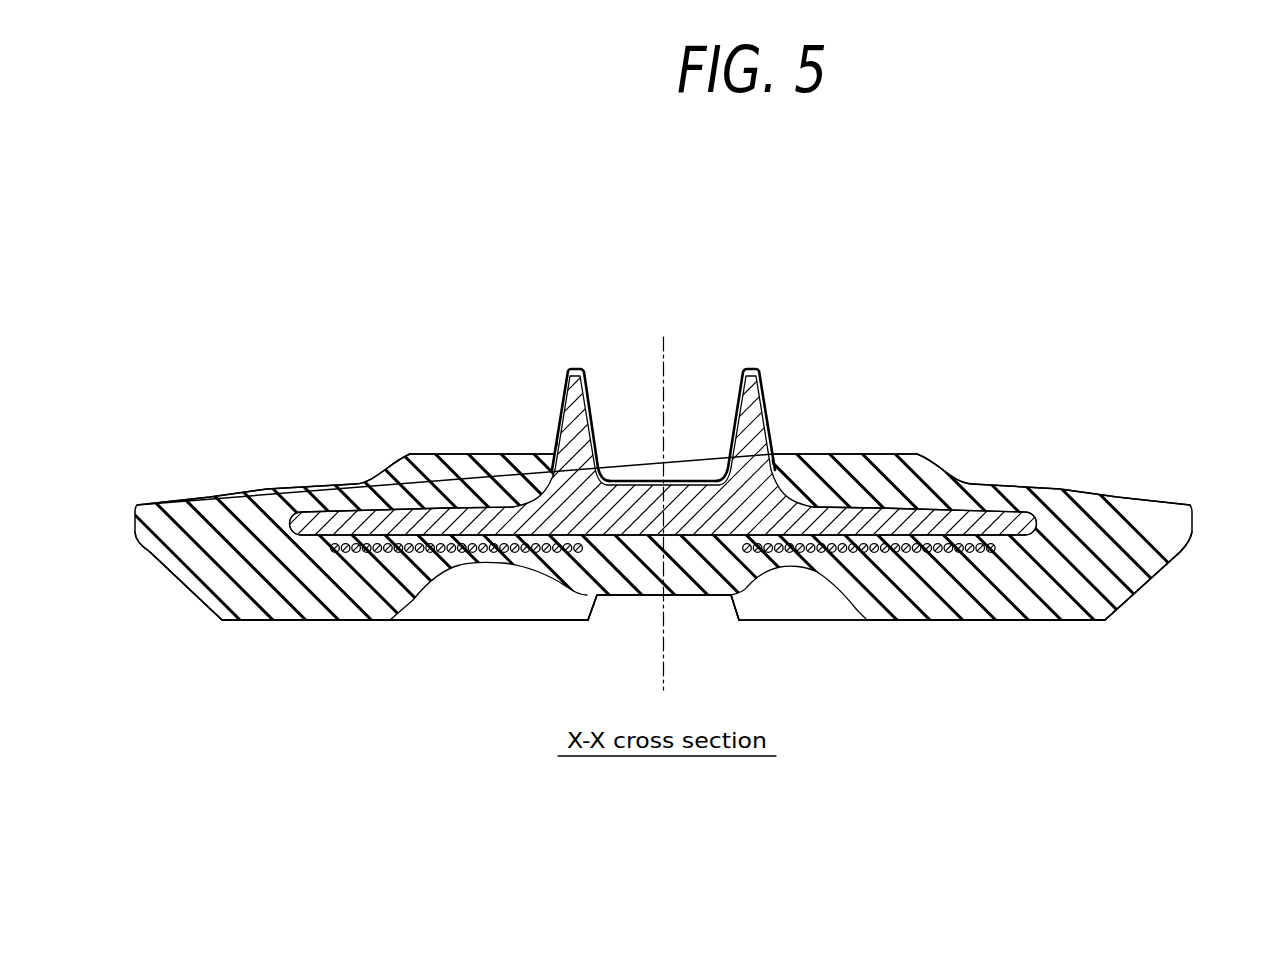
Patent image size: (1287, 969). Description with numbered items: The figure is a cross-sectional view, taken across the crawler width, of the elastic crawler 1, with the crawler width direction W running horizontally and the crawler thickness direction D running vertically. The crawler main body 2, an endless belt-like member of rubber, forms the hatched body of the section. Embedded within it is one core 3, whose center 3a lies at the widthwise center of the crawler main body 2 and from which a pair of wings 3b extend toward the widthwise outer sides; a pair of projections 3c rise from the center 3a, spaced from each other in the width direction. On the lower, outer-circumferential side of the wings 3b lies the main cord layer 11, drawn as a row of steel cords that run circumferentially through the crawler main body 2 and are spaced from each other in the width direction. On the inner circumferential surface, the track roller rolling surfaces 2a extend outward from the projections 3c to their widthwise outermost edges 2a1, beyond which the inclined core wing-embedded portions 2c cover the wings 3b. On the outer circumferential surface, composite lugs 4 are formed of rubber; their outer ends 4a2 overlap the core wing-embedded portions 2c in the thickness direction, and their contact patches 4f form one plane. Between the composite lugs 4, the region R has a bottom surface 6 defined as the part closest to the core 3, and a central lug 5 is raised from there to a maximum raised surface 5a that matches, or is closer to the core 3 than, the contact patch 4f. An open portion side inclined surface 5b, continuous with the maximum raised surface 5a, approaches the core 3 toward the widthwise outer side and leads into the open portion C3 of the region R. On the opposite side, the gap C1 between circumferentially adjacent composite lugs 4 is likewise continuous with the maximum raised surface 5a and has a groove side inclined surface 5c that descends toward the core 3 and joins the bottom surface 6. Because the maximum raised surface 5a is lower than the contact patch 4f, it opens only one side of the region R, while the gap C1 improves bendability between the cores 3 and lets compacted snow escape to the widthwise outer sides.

The elastic crawler 1 is at (972, 369).
The crawler main body 2 is at (158, 527).
The track roller rolling surface 2a is at (447, 452).
The widthwise outermost edge of the track roller rolling surface 2a1 is at (407, 452).
The core wing-embedded portion 2c is at (290, 489).
The core 3 is at (561, 500).
The center of the core 3a is at (647, 492).
The wing 3b is at (347, 522).
The projection 3c is at (574, 420).
The composite lug 4 is at (323, 632).
The outer end of the lug 4a2 is at (213, 583).
The contact patch 4f is at (258, 623).
The central lug 5 is at (629, 606).
The maximum raised surface 5a is at (690, 597).
The open portion side inclined surface 5b is at (767, 588).
The groove side inclined surface 5c is at (570, 588).
The bottom surface 6 is at (480, 567).
The main cord layer 11 is at (486, 558).
The gap C1 is at (428, 609).
The open portion C3 is at (733, 611).
The region R is at (804, 606).
The crawler width direction W is at (740, 283).
The crawler thickness direction D is at (1243, 453).